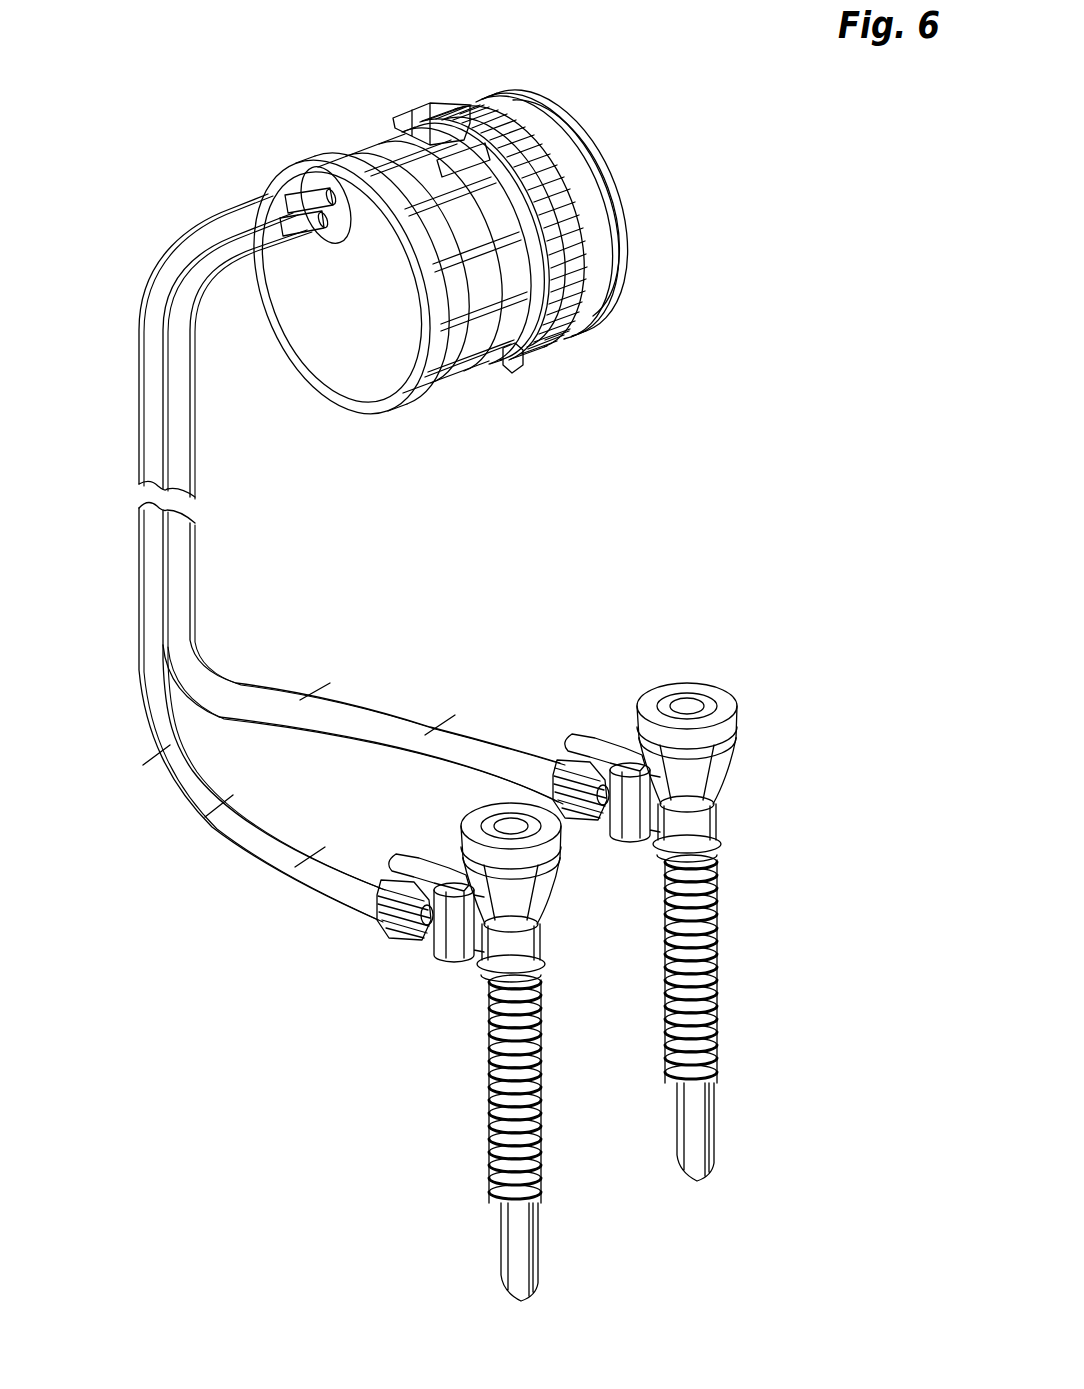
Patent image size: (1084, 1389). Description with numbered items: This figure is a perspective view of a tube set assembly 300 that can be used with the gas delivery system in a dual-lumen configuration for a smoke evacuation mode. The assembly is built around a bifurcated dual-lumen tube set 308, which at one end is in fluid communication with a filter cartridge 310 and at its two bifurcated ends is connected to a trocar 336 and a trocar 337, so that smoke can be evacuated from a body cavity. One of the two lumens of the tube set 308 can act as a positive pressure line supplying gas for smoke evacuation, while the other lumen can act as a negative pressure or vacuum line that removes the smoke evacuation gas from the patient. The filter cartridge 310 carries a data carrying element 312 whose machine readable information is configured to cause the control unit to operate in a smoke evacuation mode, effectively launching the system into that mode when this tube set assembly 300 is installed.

The tube set assembly 300 is at (737, 307).
The bifurcated dual-lumen tube set 308 is at (127, 533).
The filter cartridge 310 is at (297, 152).
The data carrying element 312 is at (488, 97).
The trocar 336 is at (653, 955).
The trocar 337 is at (477, 1097).